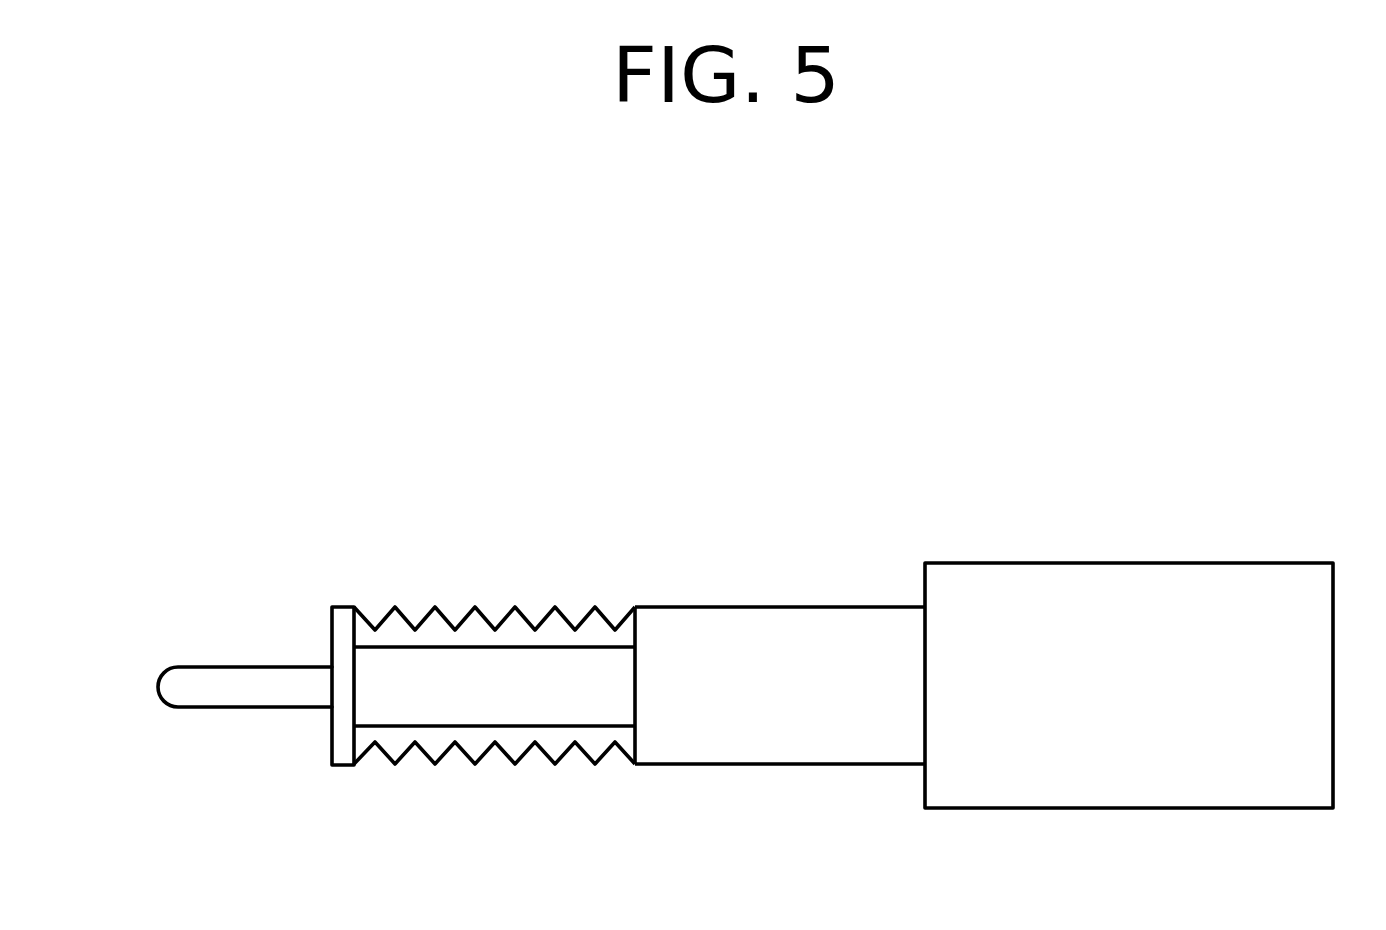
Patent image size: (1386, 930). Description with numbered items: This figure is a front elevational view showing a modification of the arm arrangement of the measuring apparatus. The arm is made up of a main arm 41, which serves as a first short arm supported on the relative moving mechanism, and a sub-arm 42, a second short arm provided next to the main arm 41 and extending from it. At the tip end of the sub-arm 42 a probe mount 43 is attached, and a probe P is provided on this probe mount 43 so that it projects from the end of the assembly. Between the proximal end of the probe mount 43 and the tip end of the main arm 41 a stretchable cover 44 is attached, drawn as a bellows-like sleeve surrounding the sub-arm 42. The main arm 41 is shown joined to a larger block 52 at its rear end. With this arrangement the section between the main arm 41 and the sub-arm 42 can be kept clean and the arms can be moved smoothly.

The main arm 41 is at (758, 623).
The sub-arm 42 is at (493, 713).
The probe mount 43 is at (342, 634).
The stretchable cover 44 is at (487, 615).
The device housing 52 is at (1068, 573).
The probe P is at (240, 697).